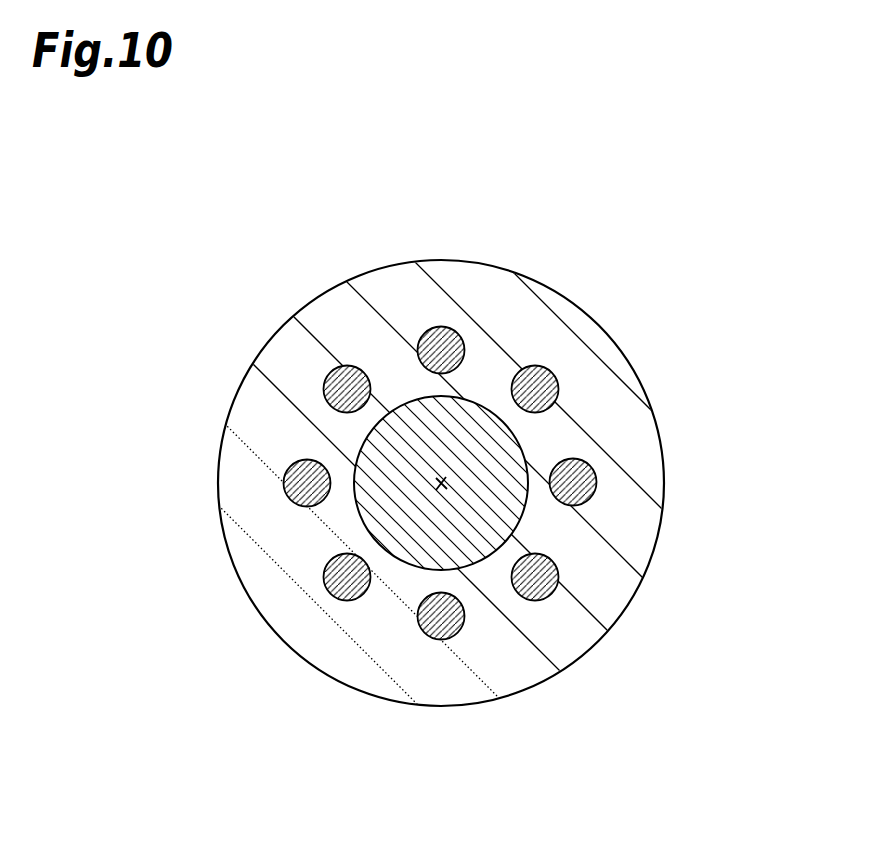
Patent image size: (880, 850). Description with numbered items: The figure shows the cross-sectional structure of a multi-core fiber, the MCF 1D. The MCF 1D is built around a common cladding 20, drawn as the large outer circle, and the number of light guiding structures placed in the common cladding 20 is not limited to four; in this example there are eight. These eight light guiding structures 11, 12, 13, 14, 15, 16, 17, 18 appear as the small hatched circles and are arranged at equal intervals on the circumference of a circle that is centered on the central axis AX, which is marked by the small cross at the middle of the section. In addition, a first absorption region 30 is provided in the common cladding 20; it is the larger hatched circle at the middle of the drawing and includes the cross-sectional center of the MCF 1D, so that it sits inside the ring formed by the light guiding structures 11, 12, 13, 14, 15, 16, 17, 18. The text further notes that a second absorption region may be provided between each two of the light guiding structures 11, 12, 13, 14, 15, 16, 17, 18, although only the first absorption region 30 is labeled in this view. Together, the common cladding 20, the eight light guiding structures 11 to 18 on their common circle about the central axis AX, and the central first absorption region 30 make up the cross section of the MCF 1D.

The MCF 1D is at (440, 437).
The light guiding structure 11 is at (442, 340).
The light guiding structure 12 is at (538, 382).
The light guiding structure 13 is at (583, 480).
The light guiding structure 14 is at (546, 590).
The light guiding structure 15 is at (447, 640).
The light guiding structure 16 is at (345, 600).
The light guiding structure 17 is at (290, 487).
The light guiding structure 18 is at (343, 390).
The common cladding 20 is at (610, 382).
The first absorption region 30 is at (498, 512).
The central axis AX is at (441, 483).